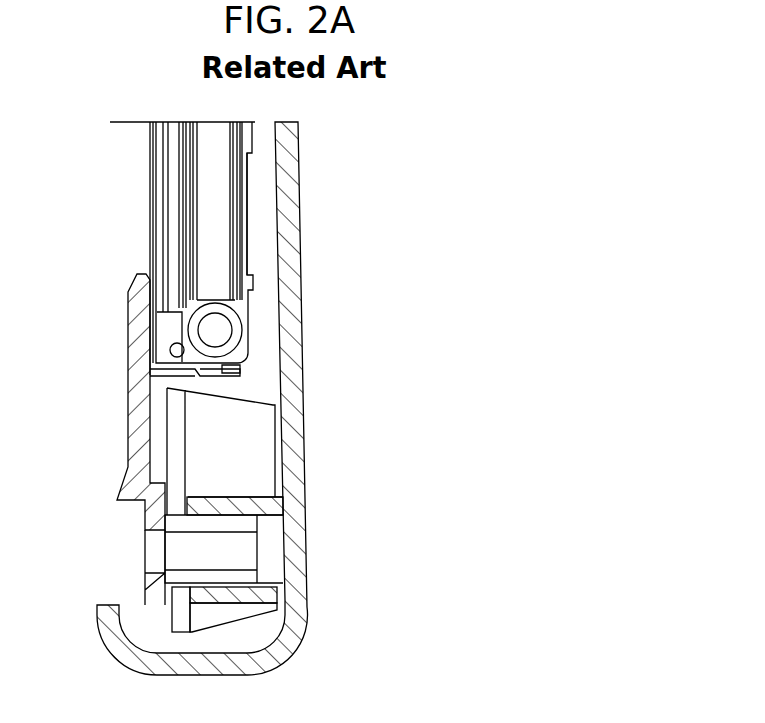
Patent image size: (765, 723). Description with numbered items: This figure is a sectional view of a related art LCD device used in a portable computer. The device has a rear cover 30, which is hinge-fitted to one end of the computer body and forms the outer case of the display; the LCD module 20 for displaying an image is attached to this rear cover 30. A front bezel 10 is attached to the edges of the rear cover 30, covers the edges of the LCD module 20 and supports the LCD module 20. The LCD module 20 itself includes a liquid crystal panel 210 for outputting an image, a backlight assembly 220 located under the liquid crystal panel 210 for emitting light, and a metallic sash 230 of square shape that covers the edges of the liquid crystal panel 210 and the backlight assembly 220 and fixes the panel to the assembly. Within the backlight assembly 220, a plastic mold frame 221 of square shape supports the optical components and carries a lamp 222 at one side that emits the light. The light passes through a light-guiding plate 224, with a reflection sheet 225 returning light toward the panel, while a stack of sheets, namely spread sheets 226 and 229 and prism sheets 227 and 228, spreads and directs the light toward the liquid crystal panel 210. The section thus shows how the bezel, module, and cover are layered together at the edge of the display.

The front bezel 10 is at (137, 380).
The LCD module 20 is at (136, 203).
The rear cover 30 is at (298, 475).
The liquid crystal panel 210 is at (160, 170).
The backlight assembly 220 is at (400, 263).
The plastic mold frame 221 is at (327, 373).
The lamp 222 is at (216, 329).
The light-guiding plate 224 is at (218, 247).
The reflection sheet 225 is at (235, 186).
The spread sheet 226 is at (190, 138).
The prism sheet 227 is at (188, 215).
The prism sheet 228 is at (195, 211).
The spread sheet 229 is at (244, 211).
The metallic sash 230 is at (155, 332).